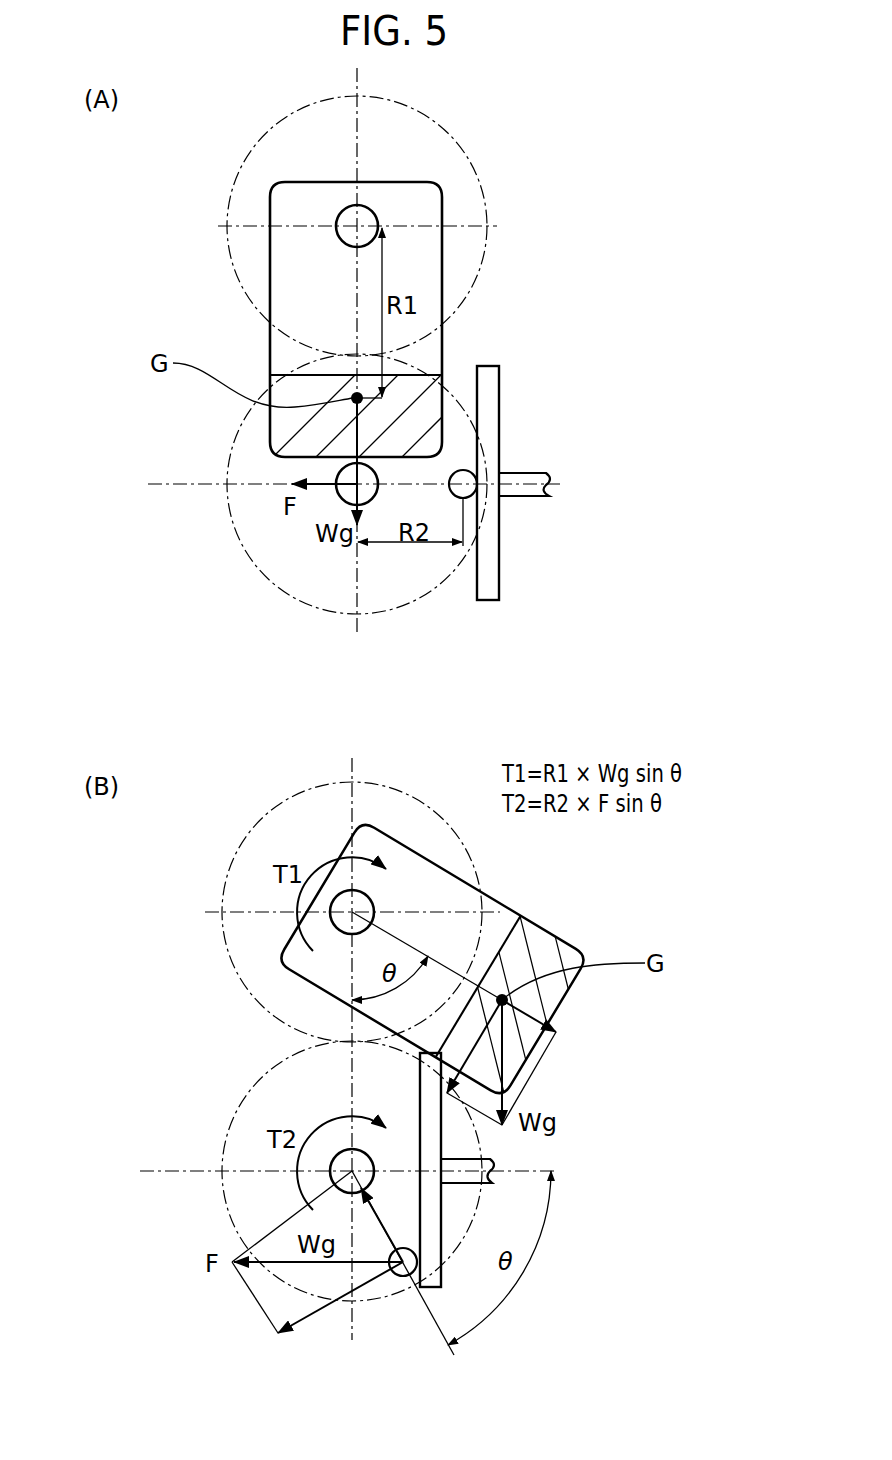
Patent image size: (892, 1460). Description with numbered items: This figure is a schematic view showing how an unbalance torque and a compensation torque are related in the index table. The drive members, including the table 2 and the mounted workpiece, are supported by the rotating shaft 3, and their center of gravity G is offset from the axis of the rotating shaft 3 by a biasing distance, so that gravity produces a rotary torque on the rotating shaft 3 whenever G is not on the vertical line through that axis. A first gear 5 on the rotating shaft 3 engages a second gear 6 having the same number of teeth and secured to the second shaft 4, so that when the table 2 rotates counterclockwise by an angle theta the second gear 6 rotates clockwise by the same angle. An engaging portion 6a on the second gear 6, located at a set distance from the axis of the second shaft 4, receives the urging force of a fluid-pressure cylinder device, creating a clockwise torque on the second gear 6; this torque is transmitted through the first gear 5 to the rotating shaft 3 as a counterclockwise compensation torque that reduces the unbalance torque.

The table 2 is at (442, 345).
The rotating shaft 3 is at (340, 214).
The second shaft 4 is at (333, 495).
The first gear 5 is at (432, 121).
The second gear 6 is at (383, 615).
The engaging portion 6a is at (467, 470).